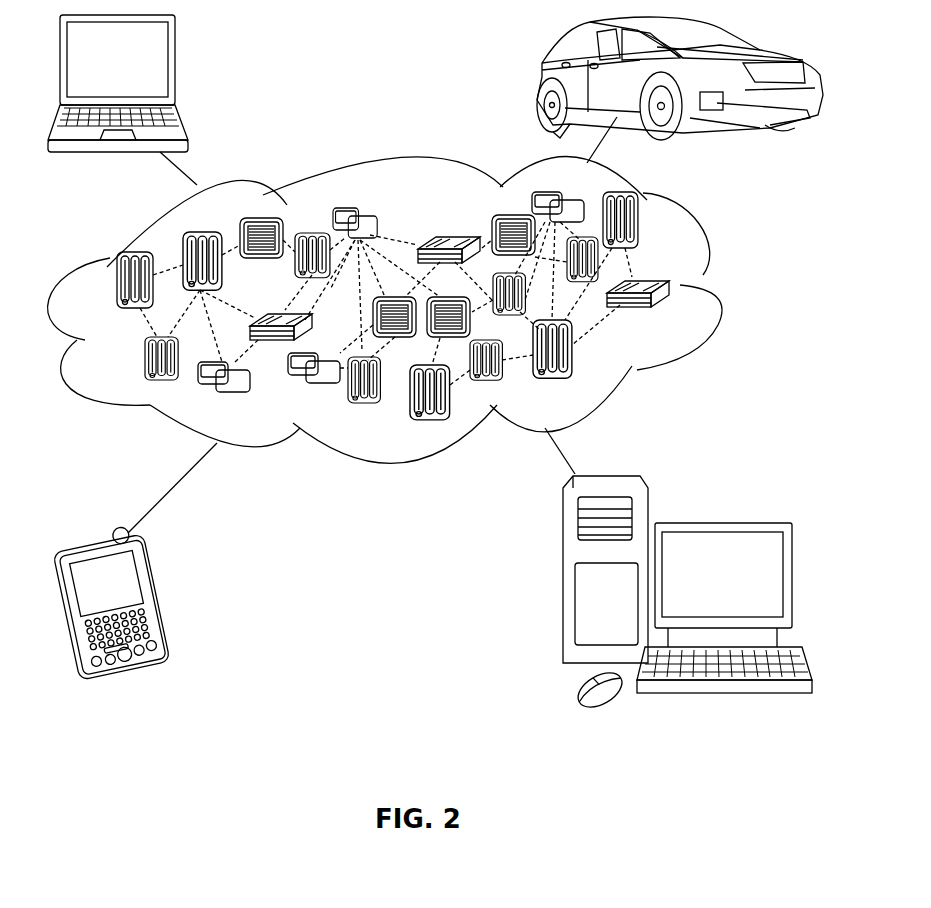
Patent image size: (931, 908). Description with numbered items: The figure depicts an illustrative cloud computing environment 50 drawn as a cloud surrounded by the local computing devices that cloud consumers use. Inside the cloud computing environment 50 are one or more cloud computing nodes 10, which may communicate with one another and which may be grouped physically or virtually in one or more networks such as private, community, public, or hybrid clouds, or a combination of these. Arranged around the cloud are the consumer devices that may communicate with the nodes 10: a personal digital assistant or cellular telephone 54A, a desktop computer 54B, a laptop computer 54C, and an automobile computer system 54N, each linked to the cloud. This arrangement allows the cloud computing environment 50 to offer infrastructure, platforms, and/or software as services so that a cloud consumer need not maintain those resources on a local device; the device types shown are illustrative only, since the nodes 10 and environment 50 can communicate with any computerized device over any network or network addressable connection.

The cloud computing node 10 is at (676, 315).
The cloud computing environment 50 is at (720, 290).
The personal digital assistant or cellular telephone 54A is at (163, 597).
The desktop computer 54B is at (720, 523).
The laptop computer 54C is at (173, 65).
The automobile computer system 54N is at (537, 80).